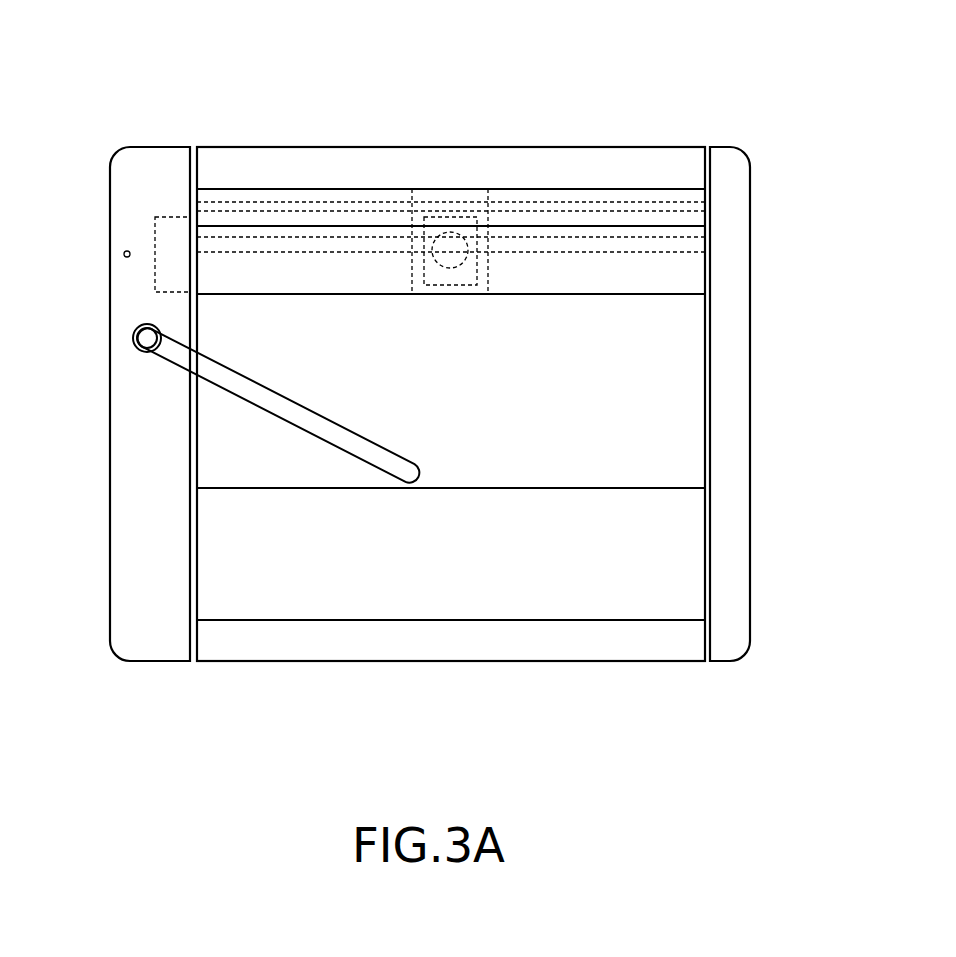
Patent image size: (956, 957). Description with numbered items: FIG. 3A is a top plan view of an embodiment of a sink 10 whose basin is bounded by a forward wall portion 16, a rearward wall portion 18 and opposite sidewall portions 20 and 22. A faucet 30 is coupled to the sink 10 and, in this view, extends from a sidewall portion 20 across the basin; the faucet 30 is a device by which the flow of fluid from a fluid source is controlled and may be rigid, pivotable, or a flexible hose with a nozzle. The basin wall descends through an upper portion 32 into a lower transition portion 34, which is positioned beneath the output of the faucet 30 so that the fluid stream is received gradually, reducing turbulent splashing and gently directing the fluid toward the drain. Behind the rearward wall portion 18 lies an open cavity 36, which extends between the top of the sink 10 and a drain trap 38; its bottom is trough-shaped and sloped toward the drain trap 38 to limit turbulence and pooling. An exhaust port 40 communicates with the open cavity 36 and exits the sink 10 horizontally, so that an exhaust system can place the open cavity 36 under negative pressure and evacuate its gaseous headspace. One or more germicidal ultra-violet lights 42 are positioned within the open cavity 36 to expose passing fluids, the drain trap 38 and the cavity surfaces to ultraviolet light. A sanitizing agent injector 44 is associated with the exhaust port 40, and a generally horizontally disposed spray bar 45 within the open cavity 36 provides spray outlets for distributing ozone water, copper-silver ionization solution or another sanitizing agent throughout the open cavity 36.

The sink 10 is at (748, 124).
The forward wall portion 16 is at (593, 598).
The rearward wall portion 18 is at (551, 308).
The sidewall portion 20 is at (208, 336).
The sidewall portion 22 is at (695, 437).
The faucet 30 is at (158, 348).
The upper portion 32 is at (440, 563).
The lower transition portion 34 is at (440, 418).
The open cavity 36 is at (264, 258).
The drain trap 38 is at (445, 252).
The exhaust port 40 is at (175, 217).
The germicidal ultra-violet light 42 is at (610, 240).
The sanitizing agent injector 44 is at (178, 252).
The spray bar 45 is at (567, 210).